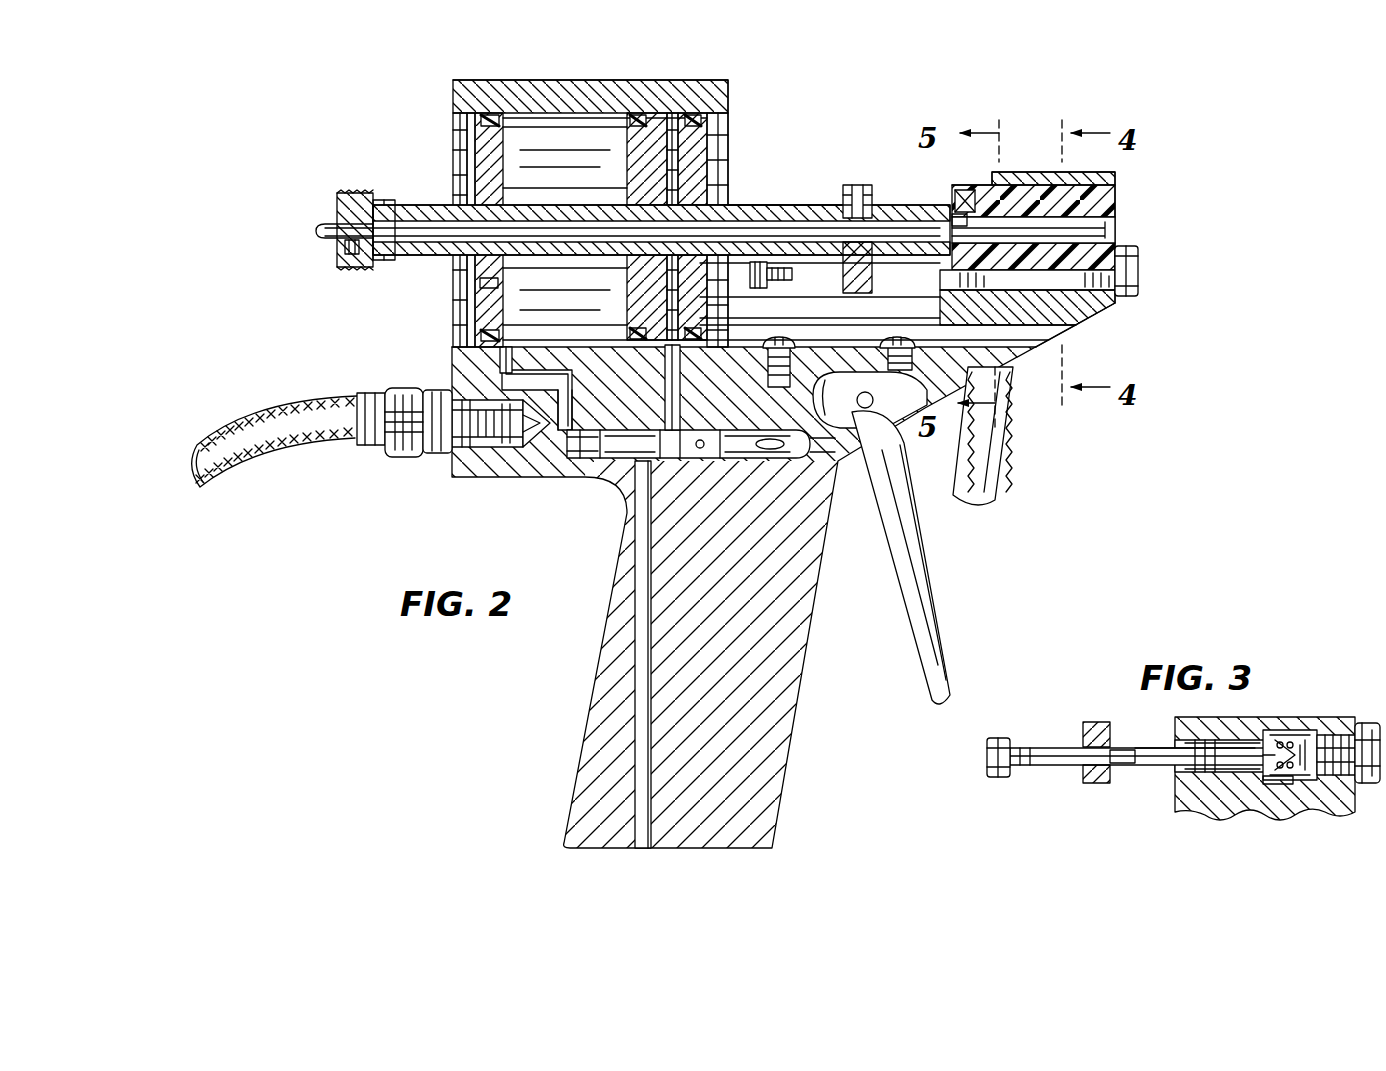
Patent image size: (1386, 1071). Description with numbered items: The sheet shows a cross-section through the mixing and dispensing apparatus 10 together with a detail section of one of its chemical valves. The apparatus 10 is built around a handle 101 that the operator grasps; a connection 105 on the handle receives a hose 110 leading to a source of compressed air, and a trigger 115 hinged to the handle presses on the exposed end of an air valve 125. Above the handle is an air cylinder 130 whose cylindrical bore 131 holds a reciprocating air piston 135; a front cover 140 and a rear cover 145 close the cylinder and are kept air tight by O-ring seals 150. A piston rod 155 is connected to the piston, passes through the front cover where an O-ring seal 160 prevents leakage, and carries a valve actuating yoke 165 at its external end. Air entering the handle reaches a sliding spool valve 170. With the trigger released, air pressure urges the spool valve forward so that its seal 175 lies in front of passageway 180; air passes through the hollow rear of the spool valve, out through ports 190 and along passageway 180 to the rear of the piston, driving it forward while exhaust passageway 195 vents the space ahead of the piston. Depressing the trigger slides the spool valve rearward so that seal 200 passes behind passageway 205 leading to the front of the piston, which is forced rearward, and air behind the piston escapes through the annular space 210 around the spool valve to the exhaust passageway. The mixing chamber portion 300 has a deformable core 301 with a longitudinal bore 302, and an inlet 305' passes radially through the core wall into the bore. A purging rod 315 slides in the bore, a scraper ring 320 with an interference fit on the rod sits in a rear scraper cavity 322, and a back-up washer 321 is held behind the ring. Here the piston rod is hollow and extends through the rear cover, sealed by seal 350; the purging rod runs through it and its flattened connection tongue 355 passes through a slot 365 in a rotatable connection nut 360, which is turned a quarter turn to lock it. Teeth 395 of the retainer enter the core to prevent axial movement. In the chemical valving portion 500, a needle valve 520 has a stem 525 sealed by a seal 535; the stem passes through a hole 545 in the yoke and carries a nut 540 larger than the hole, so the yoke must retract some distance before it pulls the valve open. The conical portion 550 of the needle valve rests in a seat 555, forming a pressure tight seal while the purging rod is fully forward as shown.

In FIG. 2, the mixing and dispensing apparatus 10 is at (777, 145).
In FIG. 2, the handle 101 is at (790, 740).
In FIG. 2, the connection 105 is at (455, 458).
In FIG. 2, the hose 110 is at (318, 404).
In FIG. 2, the trigger 115 is at (938, 620).
In FIG. 2, the air valve 125 is at (848, 460).
In FIG. 2, the air cylinder 130 is at (462, 80).
In FIG. 2, the cylindrical bore 131 is at (594, 170).
In FIG. 2, the reciprocating air piston 135 is at (553, 114).
In FIG. 2, the front cover 140 is at (672, 148).
In FIG. 2, the rear cover 145 is at (472, 130).
In FIG. 2, the O-ring seals 150 is at (470, 99).
In FIG. 2, the piston rod 155 is at (829, 203).
In FIG. 2, the O-ring seal 160 is at (694, 176).
In FIG. 2, the valve actuating yoke 165 is at (867, 226).
In FIG. 3, the valve actuating yoke 165 is at (1108, 718).
In FIG. 2, the sliding spool valve 170 is at (573, 437).
In FIG. 2, the seal 175 is at (552, 448).
In FIG. 2, the passageway 180 is at (528, 470).
In FIG. 2, the ports 190 is at (712, 459).
In FIG. 2, the exhaust passageway 195 is at (636, 578).
In FIG. 2, the seal 200 is at (648, 520).
In FIG. 2, the passageway 205 is at (665, 388).
In FIG. 2, the annular space 210 is at (600, 457).
In FIG. 2, the mixing chamber portion 300 is at (1170, 156).
In FIG. 2, the core 301 is at (1110, 205).
In FIG. 2, the longitudinal bore 302 is at (1022, 212).
In FIG. 2, the inlet 305' is at (1167, 271).
In FIG. 2, the purging rod 315 is at (1110, 229).
In FIG. 2, the scraper ring 320 is at (962, 192).
In FIG. 2, the back-up washer 321 is at (952, 213).
In FIG. 2, the rear scraper cavity 322 is at (942, 282).
In FIG. 2, the seal 350 is at (482, 283).
In FIG. 2, the connection tongue 355 is at (322, 226).
In FIG. 2, the rotatable connection nut 360 is at (360, 193).
In FIG. 2, the slot 365 is at (334, 240).
In FIG. 2, the teeth 395 is at (1120, 188).
In FIG. 2, the chemical valving portion 500 is at (1125, 318).
In FIG. 3, the needle valve 520 is at (1143, 767).
In FIG. 3, the stem 525 is at (1131, 748).
In FIG. 3, the seal 535 is at (1180, 785).
In FIG. 2, the nut 540 is at (752, 266).
In FIG. 3, the nut 540 is at (1003, 778).
In FIG. 3, the hole 545 is at (1100, 770).
In FIG. 3, the conical portion 550 is at (1270, 735).
In FIG. 3, the seat 555 is at (1280, 784).